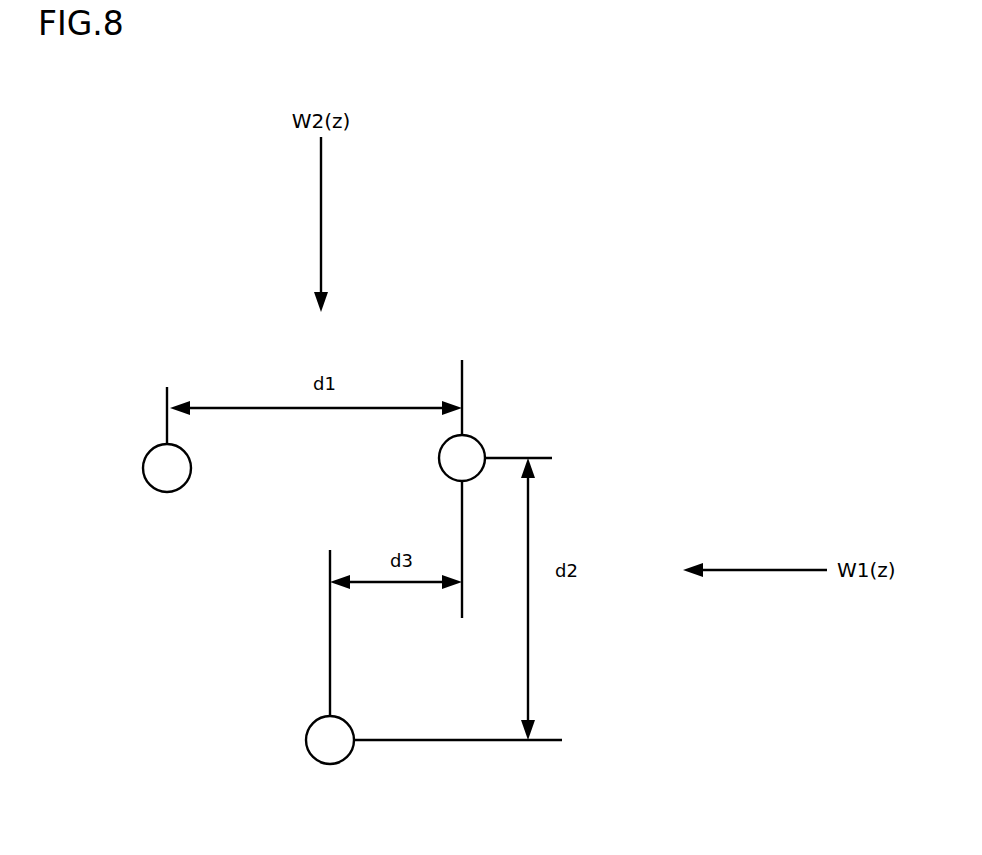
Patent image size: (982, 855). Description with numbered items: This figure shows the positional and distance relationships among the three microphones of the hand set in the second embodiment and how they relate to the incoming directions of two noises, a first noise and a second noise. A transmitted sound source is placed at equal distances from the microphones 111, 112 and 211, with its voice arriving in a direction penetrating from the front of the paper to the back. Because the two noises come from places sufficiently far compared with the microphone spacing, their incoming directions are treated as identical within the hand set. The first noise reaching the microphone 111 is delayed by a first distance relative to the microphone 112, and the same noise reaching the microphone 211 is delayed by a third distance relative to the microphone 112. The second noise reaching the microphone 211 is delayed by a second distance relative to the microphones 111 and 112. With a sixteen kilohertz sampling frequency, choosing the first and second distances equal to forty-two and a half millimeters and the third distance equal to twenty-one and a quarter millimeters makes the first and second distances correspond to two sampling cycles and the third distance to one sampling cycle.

The microphone 111 is at (145, 483).
The microphone 112 is at (483, 445).
The microphone 211 is at (309, 723).